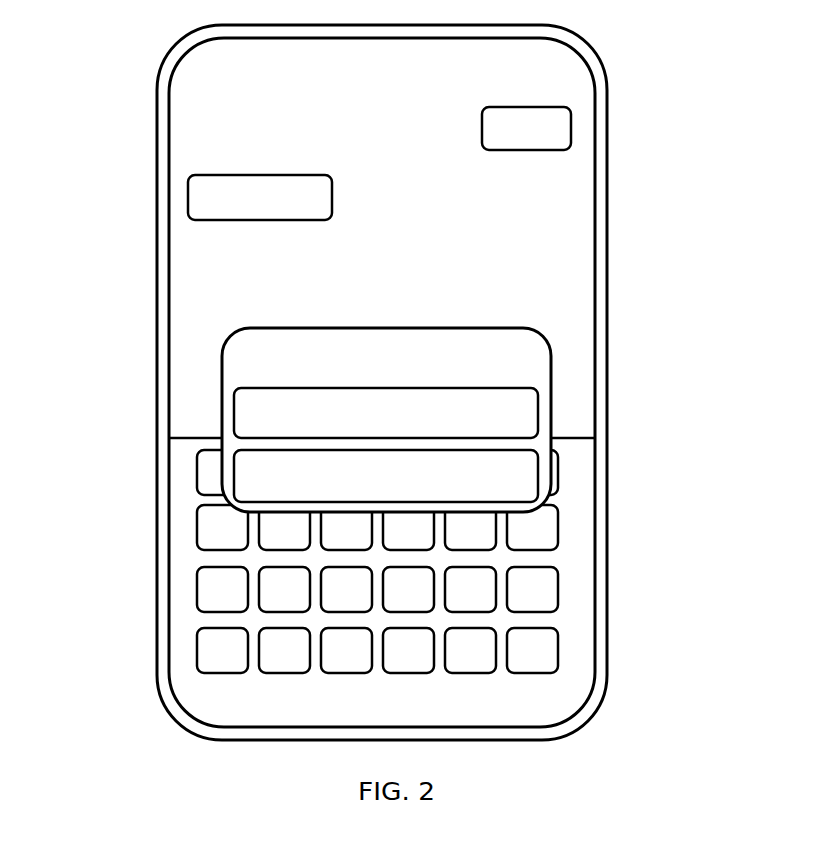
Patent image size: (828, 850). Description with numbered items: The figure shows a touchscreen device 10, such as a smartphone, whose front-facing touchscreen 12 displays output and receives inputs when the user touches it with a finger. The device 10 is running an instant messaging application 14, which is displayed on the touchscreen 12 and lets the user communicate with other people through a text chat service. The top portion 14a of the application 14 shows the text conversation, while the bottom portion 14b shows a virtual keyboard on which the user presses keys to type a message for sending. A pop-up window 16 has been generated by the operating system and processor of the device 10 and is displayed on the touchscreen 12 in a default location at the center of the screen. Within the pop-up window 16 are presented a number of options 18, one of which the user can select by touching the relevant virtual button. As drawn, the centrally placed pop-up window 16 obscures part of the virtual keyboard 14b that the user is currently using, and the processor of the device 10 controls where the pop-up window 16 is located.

The touchscreen device 10 is at (609, 200).
The touchscreen 12 is at (595, 300).
The instant messaging application 14 is at (218, 269).
The top portion 14a is at (223, 89).
The bottom portion 14b is at (218, 595).
The pop-up window 16 is at (553, 384).
The options 18 is at (241, 412).